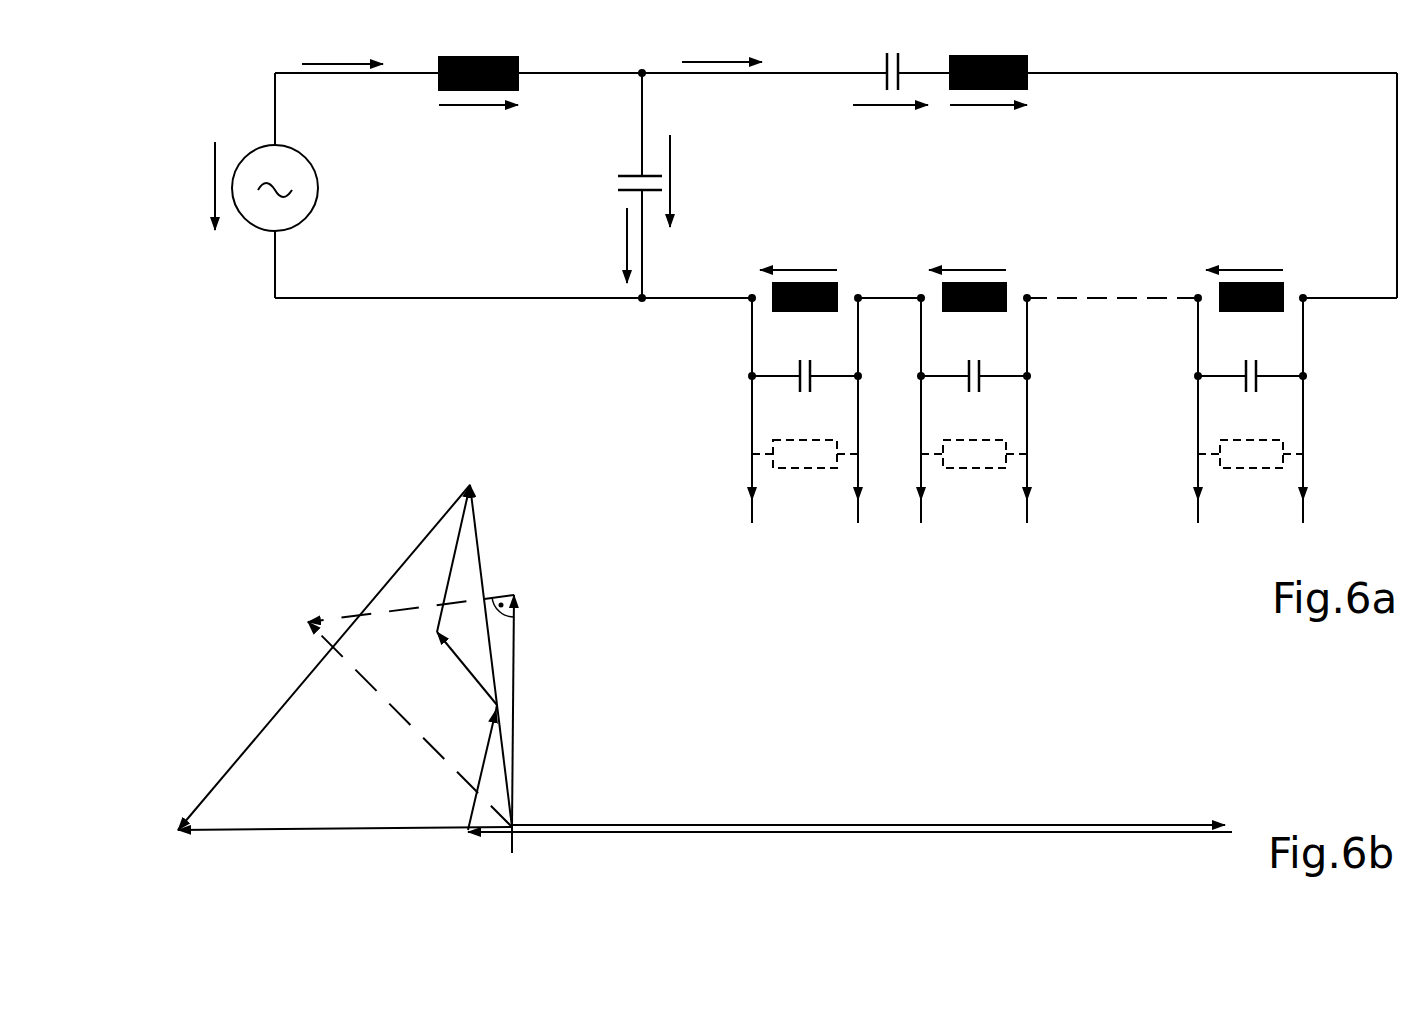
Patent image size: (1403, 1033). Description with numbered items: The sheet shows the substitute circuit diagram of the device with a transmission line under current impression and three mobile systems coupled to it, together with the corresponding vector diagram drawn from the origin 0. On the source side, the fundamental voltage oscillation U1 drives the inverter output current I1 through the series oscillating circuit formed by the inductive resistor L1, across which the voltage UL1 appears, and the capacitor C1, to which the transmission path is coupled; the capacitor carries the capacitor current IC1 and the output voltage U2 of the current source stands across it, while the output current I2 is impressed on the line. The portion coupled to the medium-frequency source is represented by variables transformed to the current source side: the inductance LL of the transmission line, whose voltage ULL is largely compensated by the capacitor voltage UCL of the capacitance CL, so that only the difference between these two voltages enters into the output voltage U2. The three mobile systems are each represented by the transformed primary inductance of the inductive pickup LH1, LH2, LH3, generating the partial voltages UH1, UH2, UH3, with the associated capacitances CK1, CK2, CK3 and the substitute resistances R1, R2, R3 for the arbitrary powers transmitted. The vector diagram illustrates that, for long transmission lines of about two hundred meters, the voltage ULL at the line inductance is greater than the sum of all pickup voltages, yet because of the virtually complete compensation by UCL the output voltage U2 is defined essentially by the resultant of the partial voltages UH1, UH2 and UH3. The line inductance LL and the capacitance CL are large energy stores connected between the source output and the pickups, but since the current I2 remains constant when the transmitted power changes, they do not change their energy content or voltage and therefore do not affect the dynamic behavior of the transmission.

In FIG. 6A, the fundamental voltage oscillation U1 is at (240, 186).
In FIG. 6B, the fundamental voltage oscillation U1 is at (303, 825).
In FIG. 6A, the inverter output current I1 is at (342, 44).
In FIG. 6B, the inverter output current I1 is at (393, 703).
In FIG. 6A, the inductive resistor L1 is at (478, 52).
In FIG. 6A, the voltage at the inductive resistor L1 UL1 is at (478, 127).
In FIG. 6B, the voltage at the inductive resistor L1 UL1 is at (210, 788).
In FIG. 6A, the capacitor C1 is at (630, 166).
In FIG. 6A, the output voltage of the current source U2 is at (696, 181).
In FIG. 6B, the output voltage of the current source U2 is at (478, 538).
In FIG. 6A, the capacitor current IC1 is at (602, 245).
In FIG. 6B, the capacitor current IC1 is at (345, 613).
In FIG. 6A, the output current I2 is at (722, 44).
In FIG. 6B, the output current I2 is at (515, 698).
In FIG. 6A, the capacitance of the transmission line CL is at (890, 51).
In FIG. 6A, the capacitor voltage UCL is at (890, 128).
In FIG. 6B, the capacitor voltage UCL is at (703, 823).
In FIG. 6A, the inductance of the transmission line LL is at (988, 50).
In FIG. 6A, the voltage at the inductive resistor LL ULL is at (988, 128).
In FIG. 6B, the voltage at the inductive resistor LL ULL is at (878, 833).
In FIG. 6A, the partial voltage of first inductive pickup UH1 is at (799, 251).
In FIG. 6B, the partial voltage of first inductive pickup UH1 is at (450, 578).
In FIG. 6A, the transformed primary inductance of first inductive pickup LH1 is at (805, 316).
In FIG. 6A, the capacitance of first inductive pickup CK1 is at (805, 395).
In FIG. 6A, the substitute resistance of first mobile system R1 is at (805, 474).
In FIG. 6A, the partial voltage of second inductive pickup UH2 is at (968, 251).
In FIG. 6B, the partial voltage of second inductive pickup UH2 is at (468, 673).
In FIG. 6A, the transformed primary inductance of second inductive pickup LH2 is at (974, 316).
In FIG. 6A, the capacitance of second inductive pickup CK2 is at (974, 395).
In FIG. 6A, the substitute resistance of second mobile system R2 is at (974, 474).
In FIG. 6A, the partial voltage of third inductive pickup UH3 is at (1245, 251).
In FIG. 6B, the partial voltage of third inductive pickup UH3 is at (482, 771).
In FIG. 6A, the transformed primary inductance of third inductive pickup LH3 is at (1251, 316).
In FIG. 6A, the capacitance of third inductive pickup CK3 is at (1250, 395).
In FIG. 6A, the substitute resistance of third mobile system R3 is at (1250, 474).
In FIG. 6B, the phasor diagram origin 0 is at (514, 874).